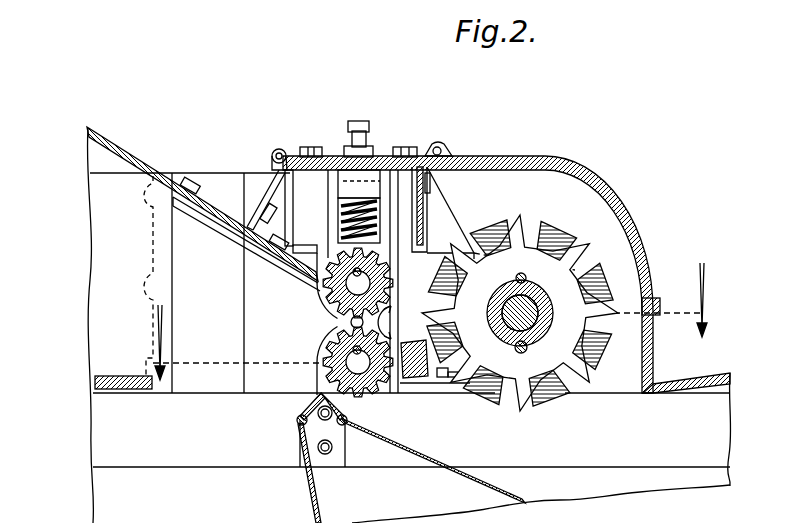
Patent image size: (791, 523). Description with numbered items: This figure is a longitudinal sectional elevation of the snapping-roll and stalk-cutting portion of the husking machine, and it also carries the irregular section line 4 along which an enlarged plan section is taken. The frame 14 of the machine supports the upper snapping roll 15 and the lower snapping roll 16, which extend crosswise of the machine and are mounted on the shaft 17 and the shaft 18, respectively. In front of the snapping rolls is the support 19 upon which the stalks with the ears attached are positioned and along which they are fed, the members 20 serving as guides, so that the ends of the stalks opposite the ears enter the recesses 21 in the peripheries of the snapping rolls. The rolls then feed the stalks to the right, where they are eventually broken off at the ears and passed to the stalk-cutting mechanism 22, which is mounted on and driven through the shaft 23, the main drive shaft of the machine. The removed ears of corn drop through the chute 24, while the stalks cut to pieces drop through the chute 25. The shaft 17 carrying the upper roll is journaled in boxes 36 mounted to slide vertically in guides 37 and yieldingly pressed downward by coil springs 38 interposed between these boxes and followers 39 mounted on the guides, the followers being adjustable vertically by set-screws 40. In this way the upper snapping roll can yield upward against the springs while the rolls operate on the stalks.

The irregular section line 4- 4 is at (150, 364).
The frame 14 is at (105, 429).
The upper snapping roll 15 is at (322, 290).
The lower snapping roll 16 is at (328, 362).
The shaft 17 is at (370, 287).
The shaft 18 is at (405, 345).
The support 19 is at (137, 391).
The guide members 20 is at (318, 297).
The recesses 21 is at (345, 320).
The stalk-cutting mechanism 22 is at (538, 270).
The shaft 23 is at (508, 316).
The chute 24 is at (384, 458).
The chute 25 is at (578, 477).
The boxes 36 is at (334, 246).
The guides 37 is at (302, 188).
The coil springs 38 is at (339, 204).
The followers 39 is at (342, 186).
The set-screws 40 is at (362, 124).